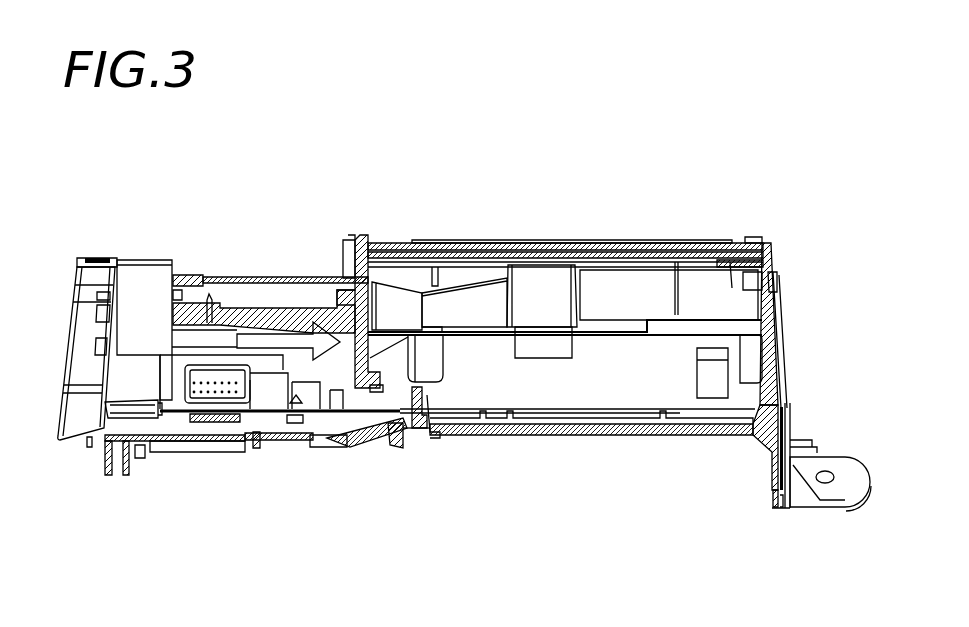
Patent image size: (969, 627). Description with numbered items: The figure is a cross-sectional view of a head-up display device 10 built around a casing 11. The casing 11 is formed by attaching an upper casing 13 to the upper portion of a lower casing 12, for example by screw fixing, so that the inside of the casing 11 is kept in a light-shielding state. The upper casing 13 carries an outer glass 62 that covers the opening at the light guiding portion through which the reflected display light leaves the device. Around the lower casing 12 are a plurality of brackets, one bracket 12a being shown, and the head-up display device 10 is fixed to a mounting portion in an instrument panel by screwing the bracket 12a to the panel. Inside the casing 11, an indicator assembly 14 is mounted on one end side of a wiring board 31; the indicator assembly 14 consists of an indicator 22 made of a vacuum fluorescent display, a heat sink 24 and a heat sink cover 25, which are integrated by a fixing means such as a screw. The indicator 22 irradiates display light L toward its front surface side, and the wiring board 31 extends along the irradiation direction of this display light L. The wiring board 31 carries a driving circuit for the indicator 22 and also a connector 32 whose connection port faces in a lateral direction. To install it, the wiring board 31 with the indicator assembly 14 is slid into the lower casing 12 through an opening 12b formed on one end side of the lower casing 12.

The head-up display device 10 is at (530, 203).
The casing 11 is at (782, 307).
The lower casing 12 is at (552, 437).
The bracket 12a is at (827, 493).
The opening 12b is at (152, 400).
The upper casing 13 is at (377, 238).
The indicator assembly 14 is at (100, 257).
The indicator 22 is at (151, 303).
The heat sink 24 is at (110, 262).
The heat sink cover 25 is at (80, 328).
The wiring board 31 is at (270, 414).
The connector 32 is at (224, 364).
The outer glass 62 is at (655, 243).
The display light L is at (268, 335).